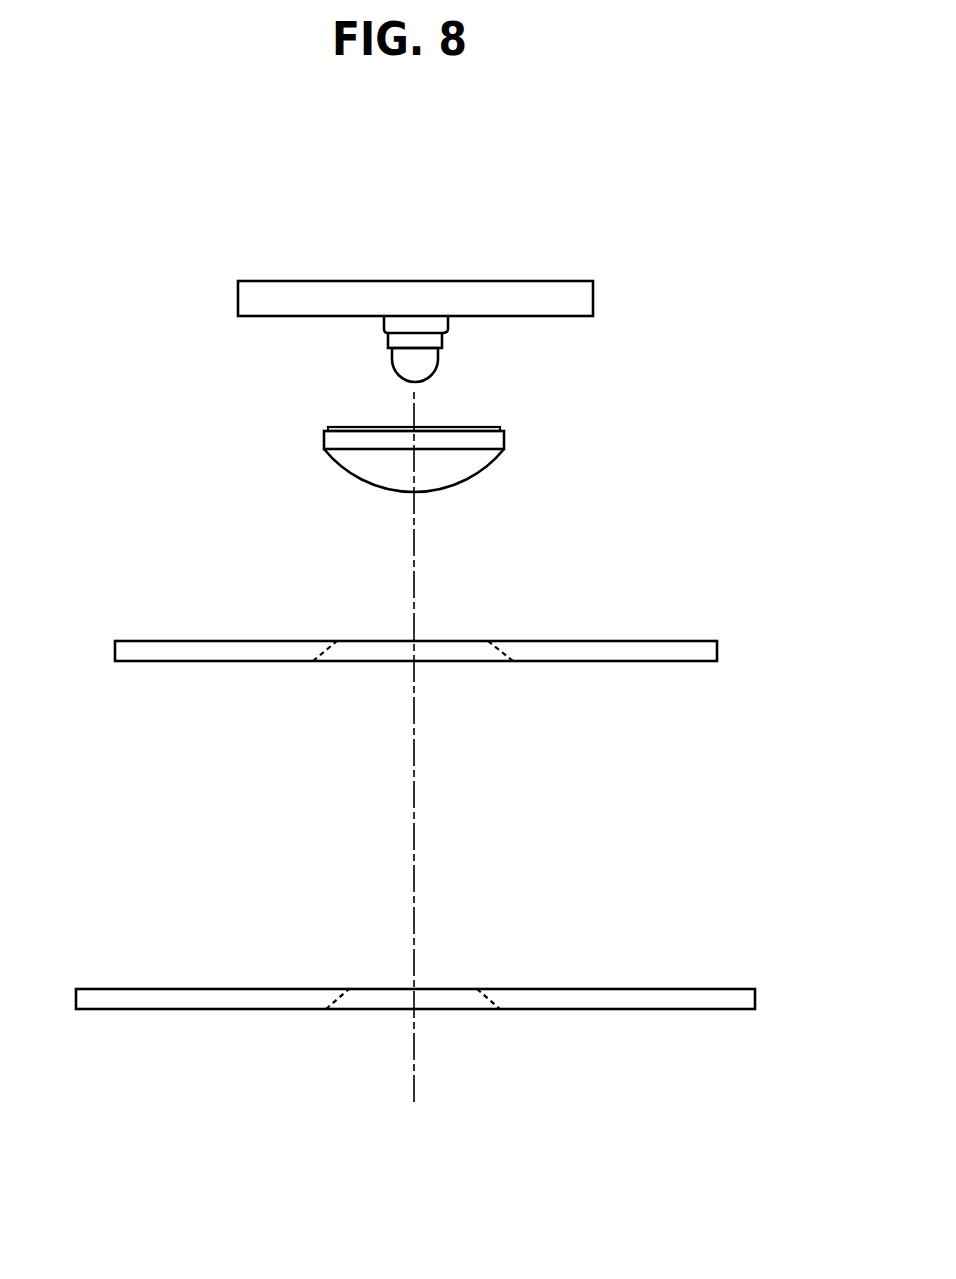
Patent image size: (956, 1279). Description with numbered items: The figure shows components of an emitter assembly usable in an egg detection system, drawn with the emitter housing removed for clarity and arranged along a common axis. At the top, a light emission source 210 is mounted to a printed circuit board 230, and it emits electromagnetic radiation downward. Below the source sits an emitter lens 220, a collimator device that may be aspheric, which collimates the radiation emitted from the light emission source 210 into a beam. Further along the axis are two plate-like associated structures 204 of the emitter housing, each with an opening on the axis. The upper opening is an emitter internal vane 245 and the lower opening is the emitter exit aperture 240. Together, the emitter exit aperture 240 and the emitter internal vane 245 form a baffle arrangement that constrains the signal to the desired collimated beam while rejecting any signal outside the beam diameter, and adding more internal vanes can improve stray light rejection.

The printed circuit board 230 is at (535, 290).
The light emission source 210 is at (425, 358).
The emitter lens 220 is at (465, 462).
The associated structures 204 is at (620, 648).
The emitter internal vane 245 is at (380, 672).
The emitter exit aperture 240 is at (380, 1017).